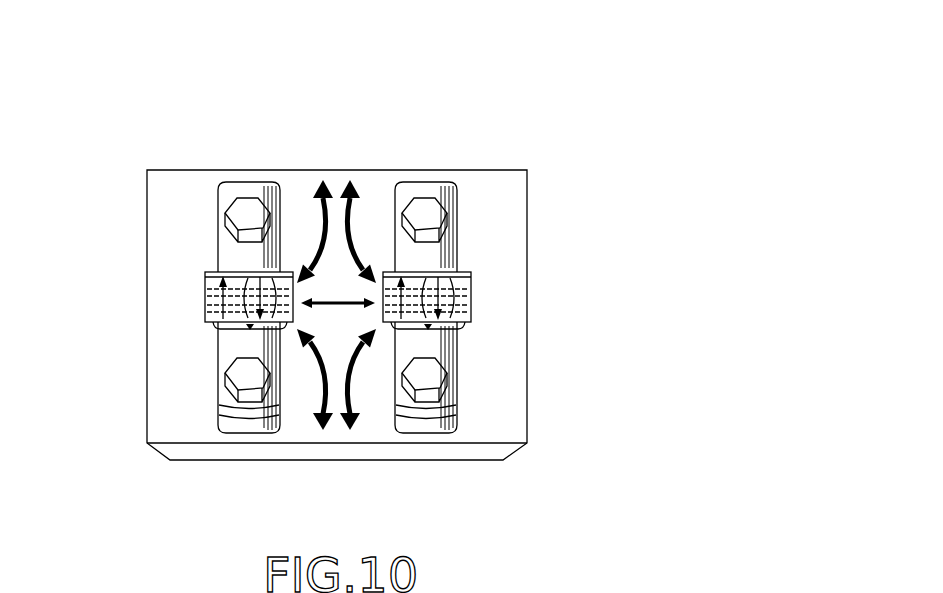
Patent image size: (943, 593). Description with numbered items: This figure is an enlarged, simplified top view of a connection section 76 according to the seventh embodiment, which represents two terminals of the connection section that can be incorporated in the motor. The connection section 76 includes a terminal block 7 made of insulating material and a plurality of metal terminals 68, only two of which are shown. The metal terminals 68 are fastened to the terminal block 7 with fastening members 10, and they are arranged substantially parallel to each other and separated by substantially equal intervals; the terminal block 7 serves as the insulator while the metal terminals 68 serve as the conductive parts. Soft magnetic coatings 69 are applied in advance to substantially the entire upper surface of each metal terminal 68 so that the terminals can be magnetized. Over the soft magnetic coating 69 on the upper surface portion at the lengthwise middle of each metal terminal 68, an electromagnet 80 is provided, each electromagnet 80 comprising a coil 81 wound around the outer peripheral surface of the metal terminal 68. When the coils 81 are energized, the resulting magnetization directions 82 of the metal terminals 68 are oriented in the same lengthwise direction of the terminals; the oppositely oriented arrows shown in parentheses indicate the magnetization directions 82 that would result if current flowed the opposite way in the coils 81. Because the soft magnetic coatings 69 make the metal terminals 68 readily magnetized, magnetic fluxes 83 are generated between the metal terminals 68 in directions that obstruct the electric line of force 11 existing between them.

The terminal block 7 is at (497, 178).
The fastening member 10 is at (246, 236).
The electric line of force 11 is at (328, 298).
The metal terminal 68 is at (231, 176).
The soft magnetic coating 69 is at (252, 180).
The connection section 76 is at (554, 74).
The electromagnet 80 is at (200, 272).
The coil 81 is at (241, 270).
The magnetization direction 82 is at (251, 329).
The magnetic flux 83 is at (317, 230).